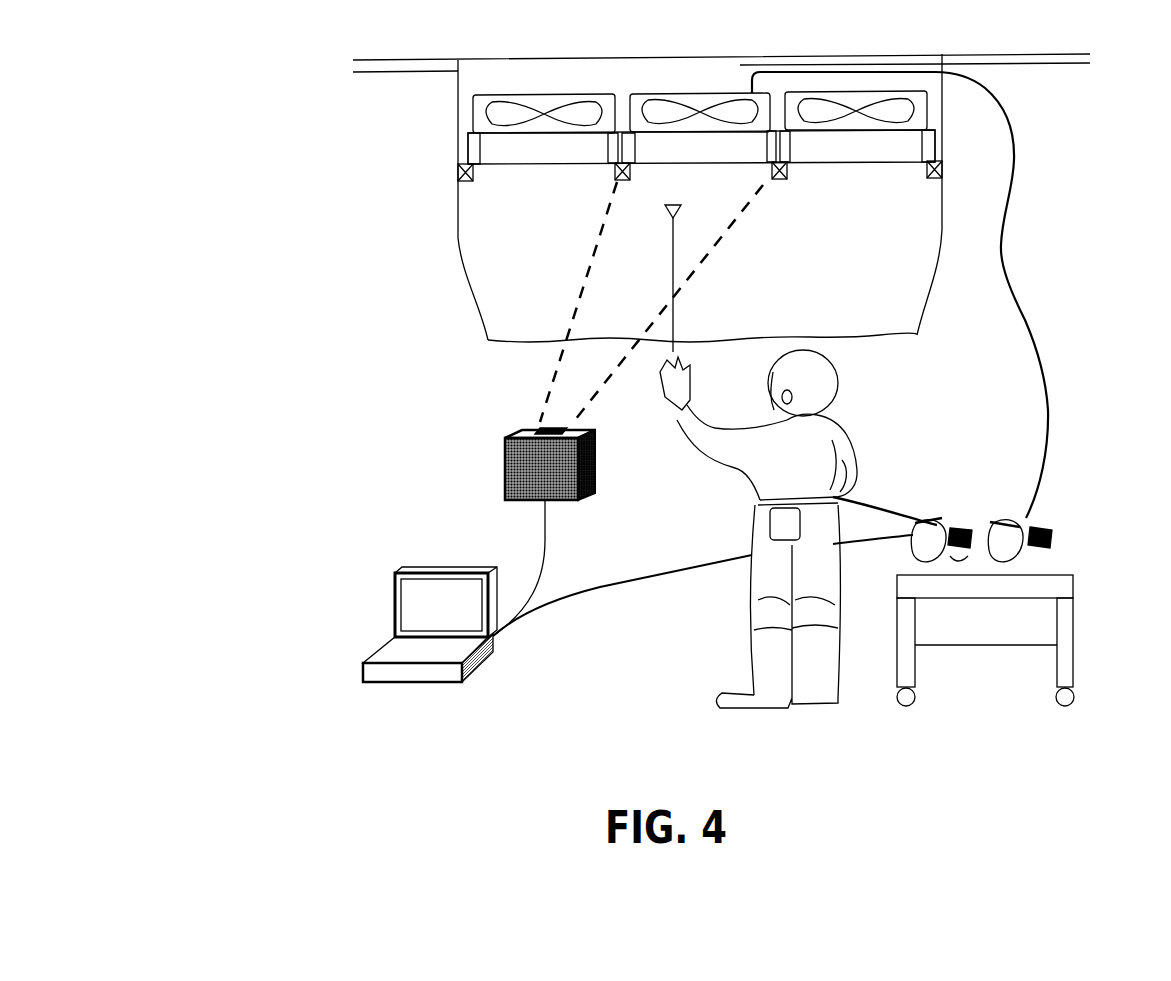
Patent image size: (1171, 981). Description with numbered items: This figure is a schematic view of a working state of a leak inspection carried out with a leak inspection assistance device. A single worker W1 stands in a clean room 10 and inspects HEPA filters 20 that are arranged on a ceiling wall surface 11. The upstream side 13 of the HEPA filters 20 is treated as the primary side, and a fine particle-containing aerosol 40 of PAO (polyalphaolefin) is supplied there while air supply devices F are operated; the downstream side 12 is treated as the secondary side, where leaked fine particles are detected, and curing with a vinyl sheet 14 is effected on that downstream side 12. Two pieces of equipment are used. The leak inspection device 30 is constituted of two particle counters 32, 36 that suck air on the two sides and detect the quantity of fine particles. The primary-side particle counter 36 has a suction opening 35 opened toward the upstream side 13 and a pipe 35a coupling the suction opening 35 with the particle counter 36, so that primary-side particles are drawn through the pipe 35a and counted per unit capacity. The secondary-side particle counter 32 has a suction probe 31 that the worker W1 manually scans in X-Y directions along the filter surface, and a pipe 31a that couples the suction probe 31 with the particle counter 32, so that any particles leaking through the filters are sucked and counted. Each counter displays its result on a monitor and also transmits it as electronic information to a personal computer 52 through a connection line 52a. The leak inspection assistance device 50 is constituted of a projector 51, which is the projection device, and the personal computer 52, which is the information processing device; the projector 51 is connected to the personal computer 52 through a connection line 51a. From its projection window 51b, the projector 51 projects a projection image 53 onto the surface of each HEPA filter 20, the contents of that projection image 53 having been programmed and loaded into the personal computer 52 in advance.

The clean room 10 is at (293, 252).
The ceiling wall surface 11 is at (1038, 64).
The downstream side 12 is at (708, 190).
The upstream side 13 is at (722, 76).
The vinyl sheet 14 is at (458, 243).
The HEPA filter 20 is at (640, 170).
The leak inspection device 30 is at (1057, 503).
The suction probe 31 is at (677, 215).
The pipe 31a is at (677, 267).
The particle counter 32 is at (938, 515).
The suction opening 35 is at (763, 88).
The pipe 35a is at (1033, 320).
The particle counter 36 is at (1012, 515).
The fine particle-containing aerosol 40 is at (688, 80).
The leak inspection assistance device 50 is at (395, 483).
The projector 51 is at (542, 465).
The connection line 51a is at (540, 545).
The projection window 51b is at (540, 420).
The personal computer 52 is at (395, 600).
The connection line 52a is at (642, 580).
The projection image 53 is at (617, 295).
The air supply device F is at (652, 118).
The worker W1 is at (757, 502).